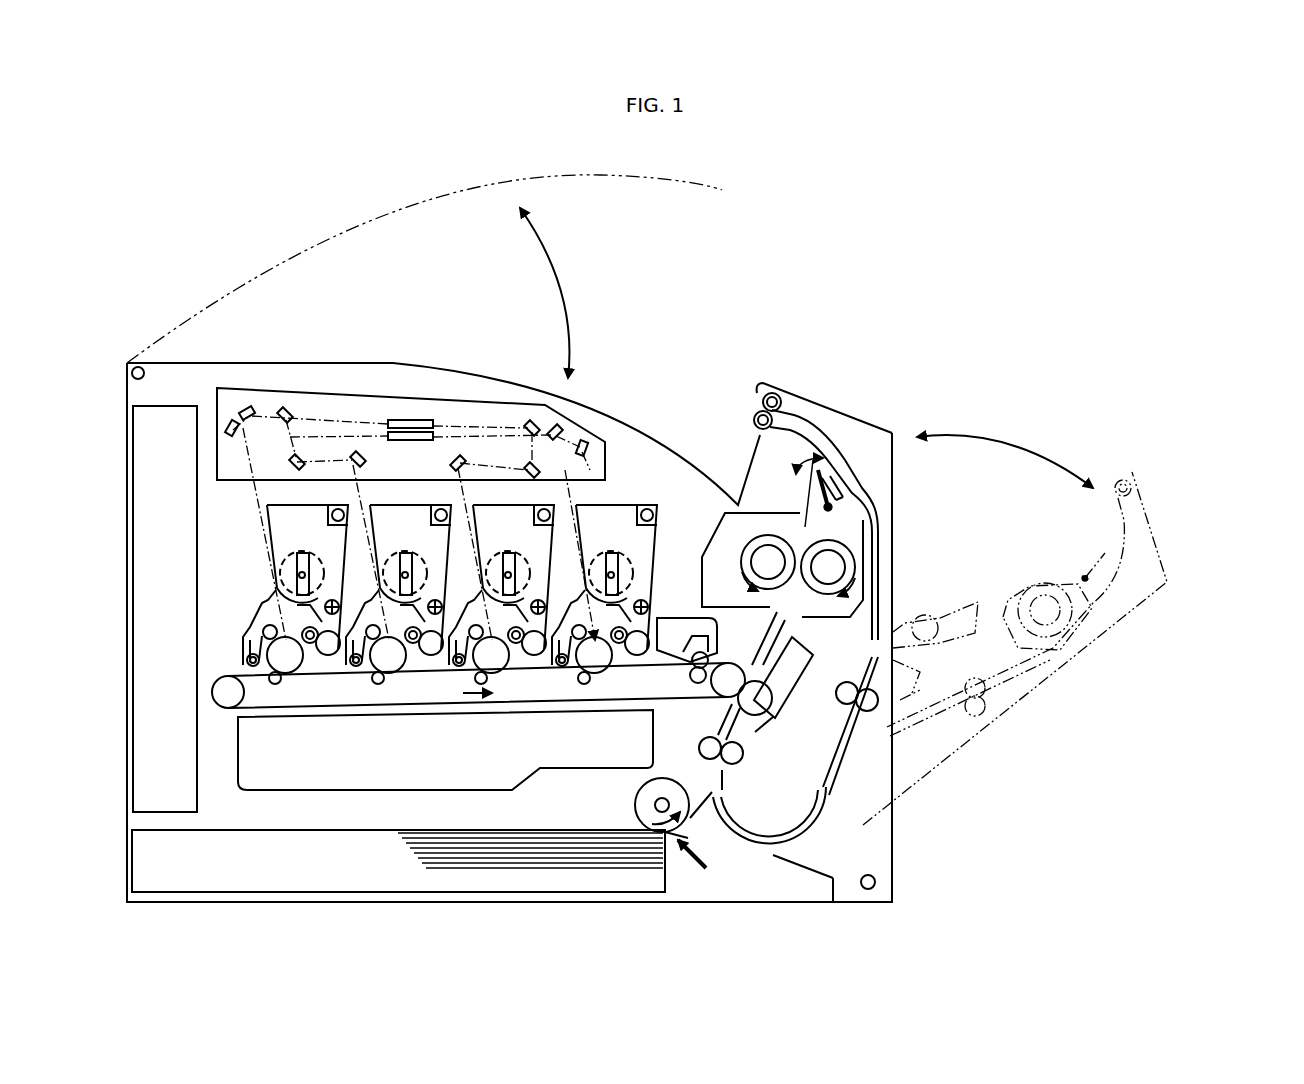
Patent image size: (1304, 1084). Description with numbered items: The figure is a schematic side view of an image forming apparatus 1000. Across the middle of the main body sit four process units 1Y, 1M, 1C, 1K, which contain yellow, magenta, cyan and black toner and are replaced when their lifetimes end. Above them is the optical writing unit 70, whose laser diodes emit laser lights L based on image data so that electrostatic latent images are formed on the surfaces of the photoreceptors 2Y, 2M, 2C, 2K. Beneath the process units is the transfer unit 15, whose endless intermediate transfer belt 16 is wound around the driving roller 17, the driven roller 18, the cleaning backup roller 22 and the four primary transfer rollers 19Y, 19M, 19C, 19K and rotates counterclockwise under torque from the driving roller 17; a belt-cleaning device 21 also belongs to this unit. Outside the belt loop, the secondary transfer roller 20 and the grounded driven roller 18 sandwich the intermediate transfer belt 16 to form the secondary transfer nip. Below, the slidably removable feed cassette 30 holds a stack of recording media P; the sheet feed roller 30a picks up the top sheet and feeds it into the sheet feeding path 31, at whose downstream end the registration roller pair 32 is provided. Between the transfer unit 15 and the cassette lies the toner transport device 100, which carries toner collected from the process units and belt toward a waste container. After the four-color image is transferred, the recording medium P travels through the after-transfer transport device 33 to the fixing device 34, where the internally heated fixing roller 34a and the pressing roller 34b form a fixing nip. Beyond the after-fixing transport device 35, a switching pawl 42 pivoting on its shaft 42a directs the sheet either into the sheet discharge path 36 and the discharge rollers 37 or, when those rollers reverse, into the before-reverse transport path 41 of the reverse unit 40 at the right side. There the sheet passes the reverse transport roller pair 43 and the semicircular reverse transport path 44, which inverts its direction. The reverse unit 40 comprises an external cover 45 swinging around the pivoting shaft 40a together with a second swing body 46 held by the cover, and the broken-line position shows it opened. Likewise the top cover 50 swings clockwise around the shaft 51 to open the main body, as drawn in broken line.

The image forming apparatus 1000 is at (867, 242).
The top cover 50 is at (367, 232).
The shaft 51 is at (132, 375).
The optical writing unit 70 is at (378, 396).
The laser lights L is at (262, 443).
The process unit for black 1K is at (262, 561).
The process unit for cyan 1C is at (365, 561).
The process unit for magenta 1M is at (468, 561).
The process unit for yellow 1Y is at (571, 561).
The photoreceptor for black 2K is at (275, 665).
The photoreceptor for cyan 2C is at (378, 665).
The photoreceptor for magenta 2M is at (481, 665).
The photoreceptor for yellow 2Y is at (584, 665).
The primary transfer roller for black 19K is at (281, 682).
The primary transfer roller for cyan 19C is at (384, 682).
The primary transfer roller for magenta 19M is at (487, 682).
The primary transfer roller for yellow 19Y is at (590, 682).
The transfer unit 15 is at (217, 717).
The intermediate transfer belt 16 is at (366, 710).
The driving roller 17 is at (224, 676).
The driven roller 18 is at (729, 663).
The secondary transfer roller 20 is at (770, 715).
The belt-cleaning device 21 is at (668, 618).
The cleaning backup roller 22 is at (693, 676).
The toner transport device 100 is at (278, 792).
The feed cassette 30 is at (132, 860).
The sheet feed roller 30a is at (634, 805).
The recording medium P is at (406, 838).
The sheet feeding path 31 is at (712, 790).
The registration roller pair 32 is at (735, 770).
The after-transfer transport device 33 is at (788, 630).
The fixing device 34 is at (712, 518).
The fixing roller 34a is at (772, 535).
The pressing roller 34b is at (822, 540).
The after-fixing transport device 35 is at (796, 478).
The sheet discharge path 36 is at (800, 422).
The discharge rollers 37 is at (786, 394).
The reverse unit 40 is at (878, 412).
The pivoting shaft 40a is at (863, 876).
The before-reverse transport path 41 is at (823, 473).
The switching pawl 42 is at (828, 488).
The shaft 42a is at (830, 503).
The reverse transport roller pair 43 is at (852, 683).
The reverse transport path 44 is at (775, 856).
The external cover 45 is at (892, 614).
The second swing body 46 is at (880, 640).